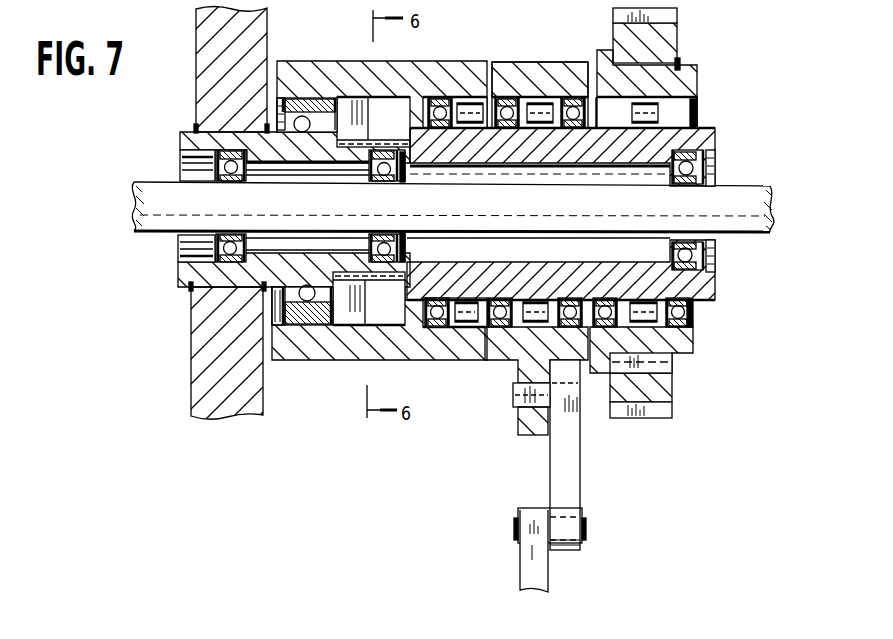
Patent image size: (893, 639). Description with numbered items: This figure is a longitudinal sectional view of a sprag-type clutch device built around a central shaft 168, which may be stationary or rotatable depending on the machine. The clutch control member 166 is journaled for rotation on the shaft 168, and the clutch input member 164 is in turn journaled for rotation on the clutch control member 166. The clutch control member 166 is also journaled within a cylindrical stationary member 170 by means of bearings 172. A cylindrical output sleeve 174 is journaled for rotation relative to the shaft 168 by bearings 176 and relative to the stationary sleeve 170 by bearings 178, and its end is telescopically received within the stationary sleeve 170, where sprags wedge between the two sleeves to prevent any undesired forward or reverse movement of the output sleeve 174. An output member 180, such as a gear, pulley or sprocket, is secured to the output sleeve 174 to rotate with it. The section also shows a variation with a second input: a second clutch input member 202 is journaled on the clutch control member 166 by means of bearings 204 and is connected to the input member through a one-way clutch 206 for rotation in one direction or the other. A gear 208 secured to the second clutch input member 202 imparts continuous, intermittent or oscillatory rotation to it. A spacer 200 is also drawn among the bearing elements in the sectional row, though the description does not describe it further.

The clutch input member 164 is at (514, 352).
The clutch control member 166 is at (716, 142).
The shaft 168 is at (750, 192).
The cylindrical stationary member 170 is at (416, 72).
The bearings 172 is at (452, 97).
The cylindrical output sleeve 174 is at (190, 143).
The bearings 176 is at (368, 180).
The bearings 178 is at (308, 112).
The output member 180 is at (205, 57).
The spacer 200 is at (538, 104).
The second clutch input member 202 is at (694, 76).
The bearings 204 is at (697, 116).
The one-way clutch 206 is at (652, 106).
The gear 208 is at (667, 40).